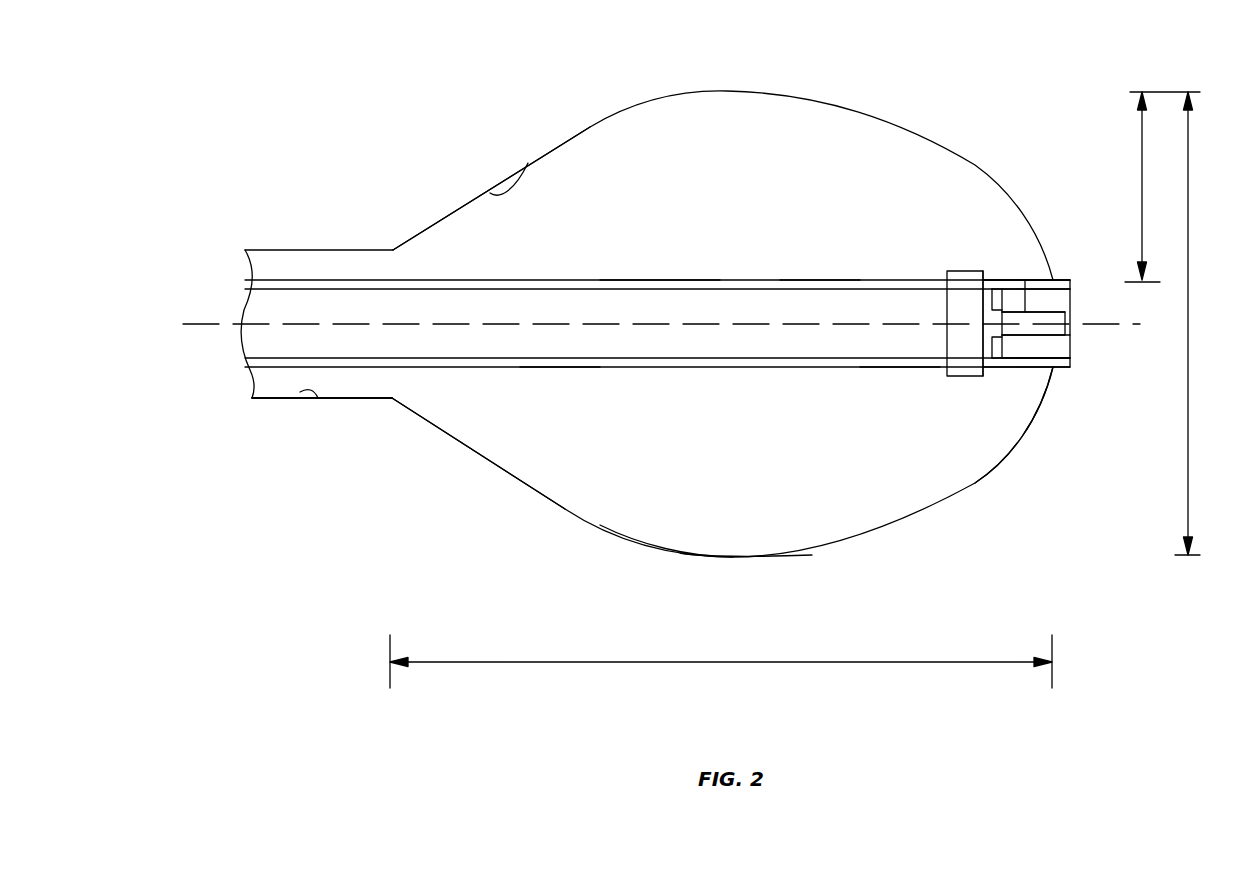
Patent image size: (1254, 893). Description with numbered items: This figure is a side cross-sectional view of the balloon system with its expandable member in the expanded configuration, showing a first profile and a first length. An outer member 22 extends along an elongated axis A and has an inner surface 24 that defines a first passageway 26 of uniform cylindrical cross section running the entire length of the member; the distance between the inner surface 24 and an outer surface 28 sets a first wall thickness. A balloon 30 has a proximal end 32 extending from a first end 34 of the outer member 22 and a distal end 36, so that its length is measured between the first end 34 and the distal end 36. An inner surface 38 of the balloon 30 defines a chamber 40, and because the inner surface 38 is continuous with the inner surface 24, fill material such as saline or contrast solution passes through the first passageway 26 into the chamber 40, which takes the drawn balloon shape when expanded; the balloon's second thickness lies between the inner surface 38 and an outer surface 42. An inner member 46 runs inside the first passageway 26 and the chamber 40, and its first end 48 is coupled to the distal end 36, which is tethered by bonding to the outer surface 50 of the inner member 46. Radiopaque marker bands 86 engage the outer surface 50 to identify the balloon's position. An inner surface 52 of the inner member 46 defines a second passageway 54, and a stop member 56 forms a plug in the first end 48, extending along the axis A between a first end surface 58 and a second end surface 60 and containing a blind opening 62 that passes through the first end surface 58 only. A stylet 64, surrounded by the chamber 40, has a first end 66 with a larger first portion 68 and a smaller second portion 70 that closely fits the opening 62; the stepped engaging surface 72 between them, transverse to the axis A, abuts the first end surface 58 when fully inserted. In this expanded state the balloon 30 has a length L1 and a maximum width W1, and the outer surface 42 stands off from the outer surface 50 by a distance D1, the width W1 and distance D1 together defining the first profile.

The outer member 22 is at (273, 250).
The inner surface 24 is at (300, 392).
The first passageway 26 is at (290, 379).
The outer surface 28 is at (363, 398).
The balloon 30 is at (668, 570).
The proximal end 32 is at (450, 433).
The first end 34 is at (357, 250).
The distal end 36 is at (1040, 402).
The inner surface 38 is at (528, 163).
The chamber 40 is at (856, 125).
The outer surface 42 is at (812, 555).
The inner member 46 is at (553, 367).
The first end 48 is at (1057, 280).
The outer surface 50 is at (900, 367).
The inner surface 52 is at (440, 283).
The second passageway 54 is at (655, 276).
The stop member 56 is at (1057, 350).
The first end surface 58 is at (997, 297).
The second end surface 60 is at (1072, 308).
The opening 62 is at (1027, 350).
The stylet 64 is at (498, 300).
The first end 66 is at (245, 303).
The first portion 68 is at (817, 280).
The second portion 70 is at (1027, 280).
The engaging surface 72 is at (992, 358).
The marker bands 86 is at (958, 271).
The elongated axis A is at (650, 324).
The distance D1 is at (1162, 187).
The maximum width W1 is at (1205, 323).
The length L1 is at (721, 668).